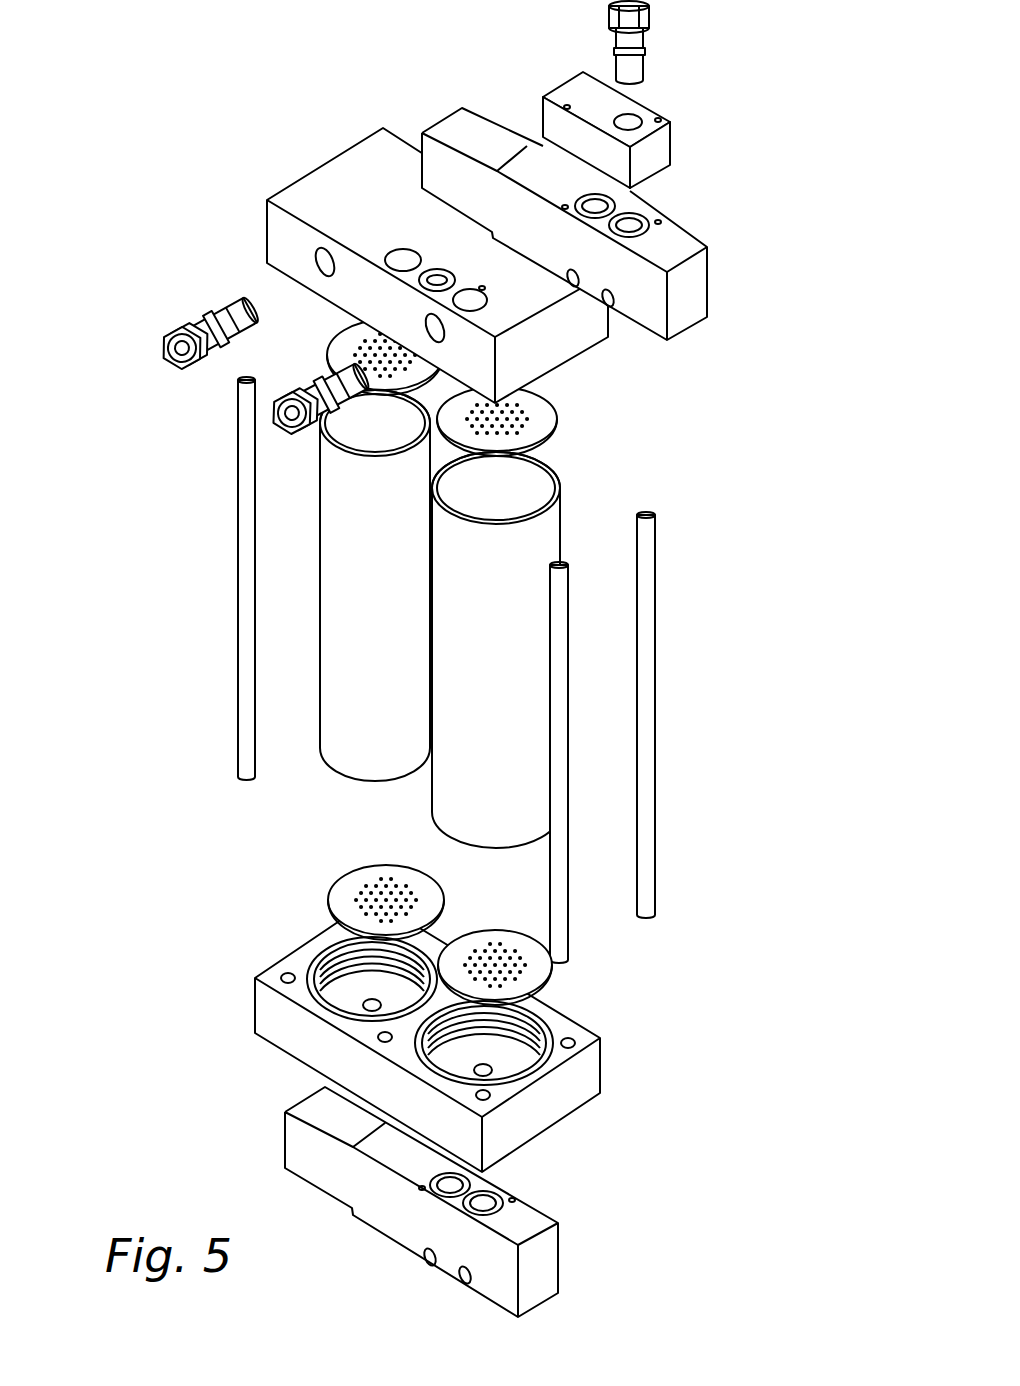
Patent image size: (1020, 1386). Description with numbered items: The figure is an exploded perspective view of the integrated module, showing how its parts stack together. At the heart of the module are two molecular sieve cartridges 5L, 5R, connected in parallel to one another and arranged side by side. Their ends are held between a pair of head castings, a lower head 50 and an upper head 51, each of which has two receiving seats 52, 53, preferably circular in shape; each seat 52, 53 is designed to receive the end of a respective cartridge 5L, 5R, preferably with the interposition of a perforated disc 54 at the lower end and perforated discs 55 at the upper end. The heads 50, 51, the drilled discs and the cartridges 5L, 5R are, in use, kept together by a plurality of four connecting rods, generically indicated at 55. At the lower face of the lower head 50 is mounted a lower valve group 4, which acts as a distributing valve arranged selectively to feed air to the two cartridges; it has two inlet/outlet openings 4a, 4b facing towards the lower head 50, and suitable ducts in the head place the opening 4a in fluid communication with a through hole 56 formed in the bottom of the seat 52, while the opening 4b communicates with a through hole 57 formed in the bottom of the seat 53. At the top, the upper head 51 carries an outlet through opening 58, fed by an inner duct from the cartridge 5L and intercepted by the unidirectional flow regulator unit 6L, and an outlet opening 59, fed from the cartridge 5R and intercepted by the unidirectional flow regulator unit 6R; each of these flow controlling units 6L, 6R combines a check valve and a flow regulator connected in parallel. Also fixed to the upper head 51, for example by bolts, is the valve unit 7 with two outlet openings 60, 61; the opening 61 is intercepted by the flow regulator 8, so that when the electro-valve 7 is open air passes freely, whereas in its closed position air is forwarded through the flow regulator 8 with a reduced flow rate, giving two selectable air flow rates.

The distributing valve 4 is at (448, 1202).
The inlet/outlet opening 4a is at (472, 1181).
The inlet/outlet opening 4b is at (510, 1199).
The molecular sieve cartridge 5L is at (342, 753).
The molecular sieve cartridge 5R is at (440, 790).
The flow controlling unit 6L is at (161, 344).
The flow controlling unit 6R is at (292, 390).
The electro-valve 7 is at (585, 220).
The flow regulator 8 is at (643, 62).
The lower head casting 50 is at (436, 1029).
The upper head casting 51 is at (415, 246).
The receiving seat 52 is at (338, 1000).
The receiving seat 53 is at (503, 1050).
The perforated disc 54 is at (473, 932).
The connecting rods 55 is at (243, 600).
The through hole 56 is at (366, 1001).
The through hole 57 is at (493, 1070).
The outlet through opening 58 is at (393, 249).
The outlet opening 59 is at (474, 294).
The outlet opening 60 is at (605, 201).
The outlet opening 61 is at (640, 218).